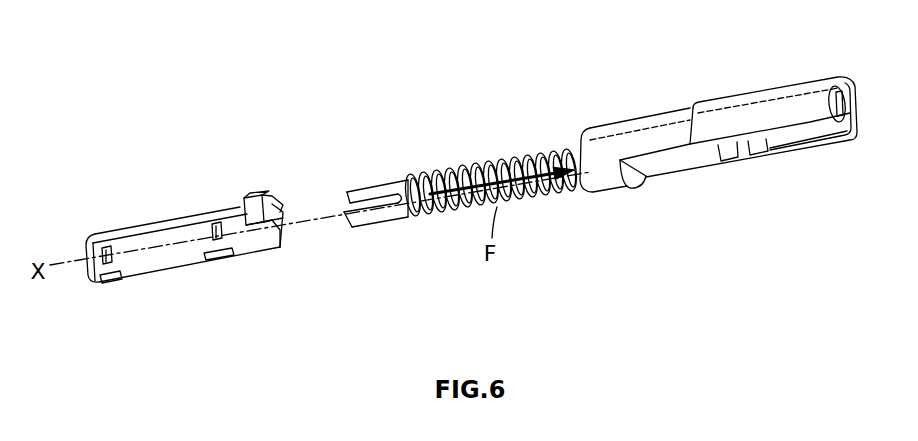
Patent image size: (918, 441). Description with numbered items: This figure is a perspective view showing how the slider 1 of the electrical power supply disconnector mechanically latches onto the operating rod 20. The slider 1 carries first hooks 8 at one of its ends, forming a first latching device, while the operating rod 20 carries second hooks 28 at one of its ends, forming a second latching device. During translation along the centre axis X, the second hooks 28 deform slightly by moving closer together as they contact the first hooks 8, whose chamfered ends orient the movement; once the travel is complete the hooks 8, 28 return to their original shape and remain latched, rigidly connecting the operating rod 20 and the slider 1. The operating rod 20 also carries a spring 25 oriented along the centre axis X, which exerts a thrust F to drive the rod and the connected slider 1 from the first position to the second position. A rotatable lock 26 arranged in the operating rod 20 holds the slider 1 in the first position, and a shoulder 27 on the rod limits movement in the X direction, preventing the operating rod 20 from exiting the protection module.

The slider 1 is at (144, 233).
The first hooks 8 is at (278, 228).
The operating rod 20 is at (678, 132).
The spring 25 is at (463, 170).
The lock 26 is at (850, 100).
The shoulder 27 is at (618, 176).
The second hooks 28 is at (350, 198).